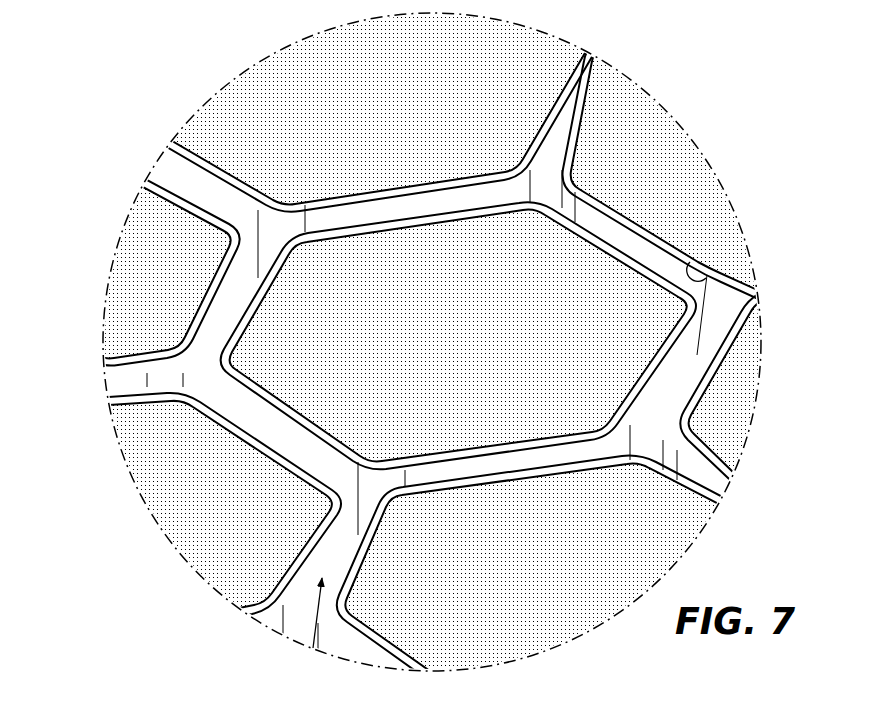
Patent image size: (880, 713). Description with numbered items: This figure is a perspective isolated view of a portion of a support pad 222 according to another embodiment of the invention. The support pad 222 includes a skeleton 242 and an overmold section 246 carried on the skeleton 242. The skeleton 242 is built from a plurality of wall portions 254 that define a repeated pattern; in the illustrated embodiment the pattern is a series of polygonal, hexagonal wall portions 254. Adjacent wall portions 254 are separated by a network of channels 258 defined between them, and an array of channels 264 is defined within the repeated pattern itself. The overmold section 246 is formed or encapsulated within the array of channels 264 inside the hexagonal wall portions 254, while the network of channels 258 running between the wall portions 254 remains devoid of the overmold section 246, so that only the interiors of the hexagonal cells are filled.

The support pad 222 is at (694, 86).
The skeleton 242 is at (300, 602).
The overmold section 246 is at (680, 200).
The wall portions 254 is at (240, 323).
The network of channels 258 is at (312, 630).
The array of channels 264 is at (287, 304).